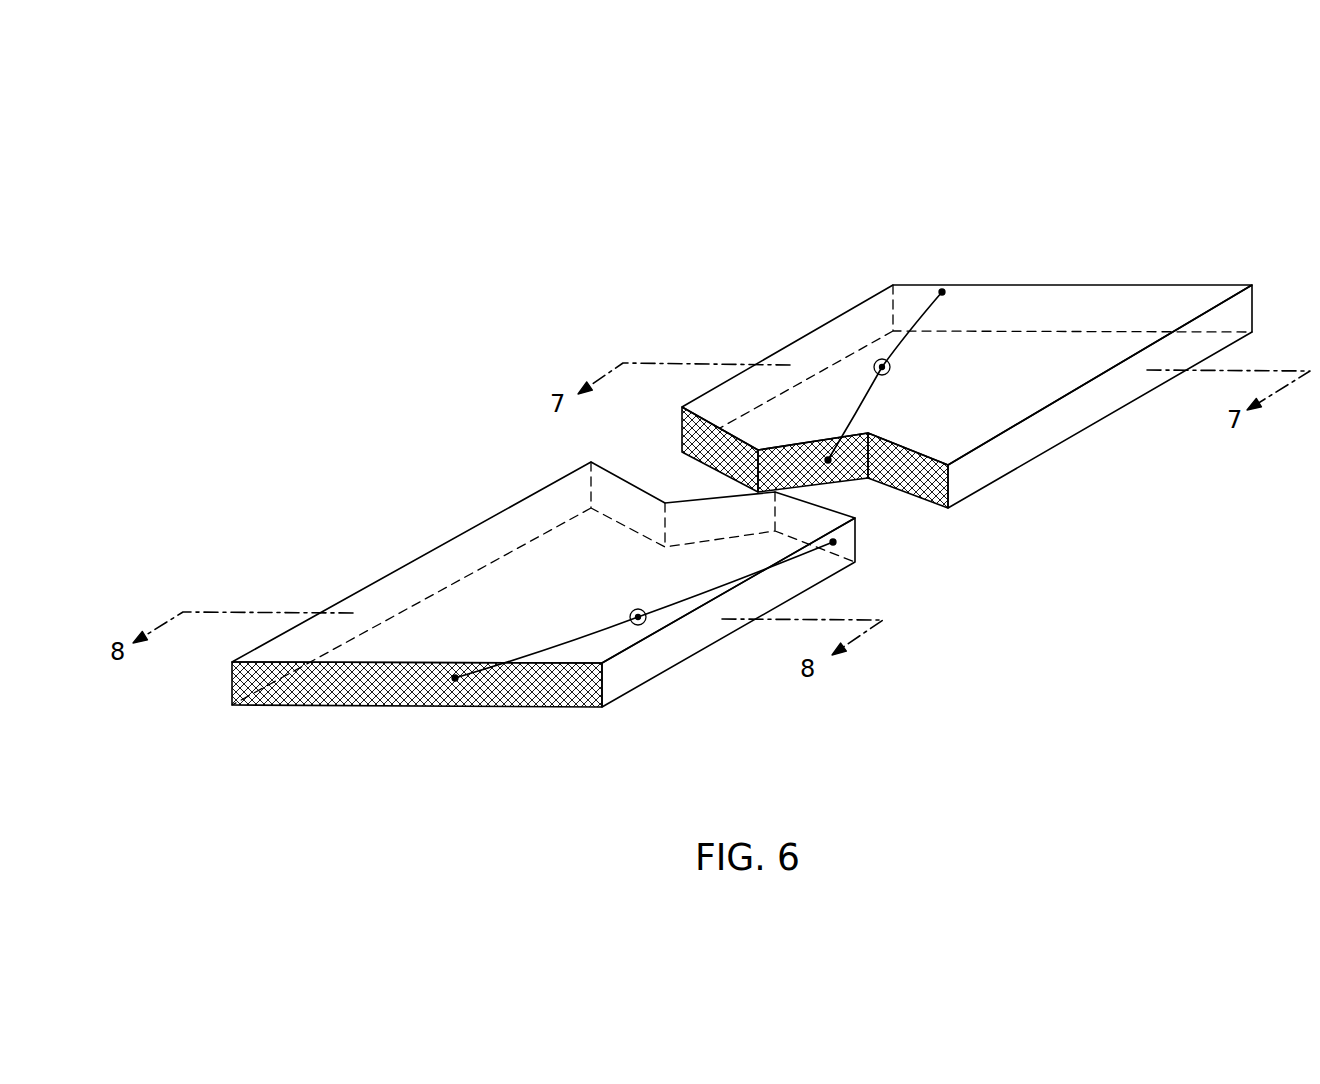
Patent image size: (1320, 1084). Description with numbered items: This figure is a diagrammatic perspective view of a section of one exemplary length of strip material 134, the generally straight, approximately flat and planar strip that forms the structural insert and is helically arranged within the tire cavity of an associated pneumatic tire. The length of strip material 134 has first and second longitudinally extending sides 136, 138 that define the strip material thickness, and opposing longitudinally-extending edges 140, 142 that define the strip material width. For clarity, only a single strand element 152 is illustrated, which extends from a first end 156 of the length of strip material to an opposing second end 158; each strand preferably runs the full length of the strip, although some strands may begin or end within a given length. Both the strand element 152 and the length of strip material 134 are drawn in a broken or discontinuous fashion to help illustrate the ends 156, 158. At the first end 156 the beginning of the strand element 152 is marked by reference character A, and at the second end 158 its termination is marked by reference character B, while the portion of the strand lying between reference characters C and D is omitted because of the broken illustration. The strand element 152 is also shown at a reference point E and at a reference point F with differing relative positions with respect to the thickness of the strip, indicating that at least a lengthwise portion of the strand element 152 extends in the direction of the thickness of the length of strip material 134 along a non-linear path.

The length of strip material 134 is at (1038, 532).
The first longitudinally extending side 136 is at (452, 641).
The second longitudinally extending side 138 is at (998, 355).
The longitudinally-extending edge 140 is at (1062, 422).
The longitudinally-extending edge 142 is at (428, 578).
The strand element 152 is at (862, 403).
The first end 156 is at (855, 272).
The second end 158 is at (650, 712).
The reference character A is at (945, 291).
The reference character B is at (455, 679).
The reference character C is at (826, 459).
The reference character D is at (833, 542).
The reference point E is at (875, 359).
The reference point F is at (637, 610).